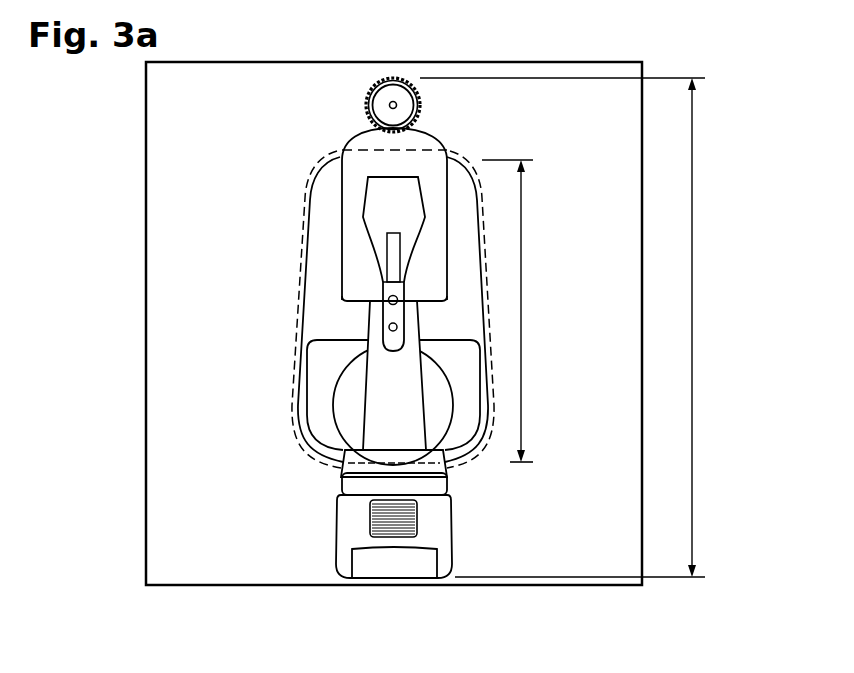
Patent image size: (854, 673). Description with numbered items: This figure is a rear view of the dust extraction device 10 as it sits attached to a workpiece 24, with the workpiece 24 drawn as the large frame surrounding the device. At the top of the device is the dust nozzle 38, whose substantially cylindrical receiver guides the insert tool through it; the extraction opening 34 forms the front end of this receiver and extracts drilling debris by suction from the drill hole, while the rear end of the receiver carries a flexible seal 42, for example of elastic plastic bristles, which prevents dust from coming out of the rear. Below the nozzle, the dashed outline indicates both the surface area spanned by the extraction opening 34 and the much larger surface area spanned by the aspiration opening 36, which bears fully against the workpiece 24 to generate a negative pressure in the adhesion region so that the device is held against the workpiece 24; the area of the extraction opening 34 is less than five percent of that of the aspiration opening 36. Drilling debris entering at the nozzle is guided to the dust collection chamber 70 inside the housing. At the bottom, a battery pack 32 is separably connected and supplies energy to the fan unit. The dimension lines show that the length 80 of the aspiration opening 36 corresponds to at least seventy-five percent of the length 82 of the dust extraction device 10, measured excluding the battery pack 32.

The dust extraction device 10 is at (420, 328).
The workpiece 24 is at (163, 190).
The battery pack 32 is at (480, 542).
The extraction opening 34 is at (367, 92).
The aspiration opening 36 is at (307, 246).
The dust nozzle 38 is at (432, 99).
The flexible seal 42 is at (373, 108).
The dust collection chamber 70 is at (465, 148).
The length of the aspiration opening 80 is at (523, 310).
The length of the dust extraction device 82 is at (695, 326).